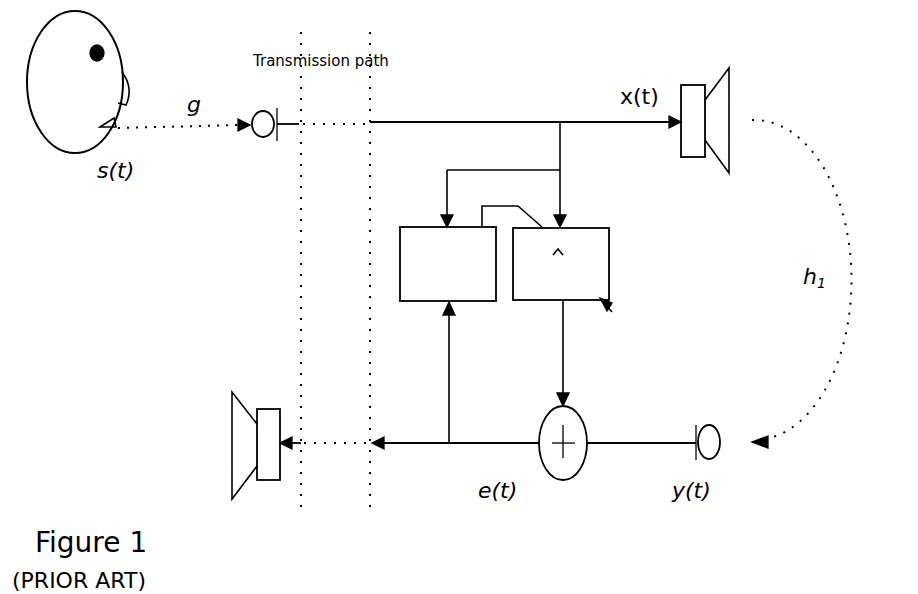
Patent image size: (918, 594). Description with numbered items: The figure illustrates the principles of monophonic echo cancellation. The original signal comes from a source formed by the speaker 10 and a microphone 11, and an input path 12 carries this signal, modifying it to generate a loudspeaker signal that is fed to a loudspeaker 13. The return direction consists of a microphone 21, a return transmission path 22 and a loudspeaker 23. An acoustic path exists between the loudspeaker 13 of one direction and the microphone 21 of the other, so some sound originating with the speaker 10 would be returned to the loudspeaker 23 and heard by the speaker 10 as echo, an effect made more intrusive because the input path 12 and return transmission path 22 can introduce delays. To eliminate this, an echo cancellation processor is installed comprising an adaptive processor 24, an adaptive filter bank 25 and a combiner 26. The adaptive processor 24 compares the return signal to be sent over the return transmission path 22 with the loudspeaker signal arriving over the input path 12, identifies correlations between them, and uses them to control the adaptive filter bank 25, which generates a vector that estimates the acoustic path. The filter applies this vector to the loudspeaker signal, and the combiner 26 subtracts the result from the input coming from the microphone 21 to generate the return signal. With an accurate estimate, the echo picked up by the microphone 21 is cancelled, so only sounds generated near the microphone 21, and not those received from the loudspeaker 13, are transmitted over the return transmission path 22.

The speaker 10 is at (85, 82).
The microphone 11 is at (277, 120).
The input path 12 is at (492, 114).
The loudspeaker 13 is at (706, 113).
The microphone 21 is at (716, 436).
The return transmission path 22 is at (409, 436).
The loudspeaker 23 is at (256, 438).
The adaptive processor 24 is at (469, 251).
The adaptive filter bank 25 is at (579, 270).
The combiner 26 is at (577, 405).